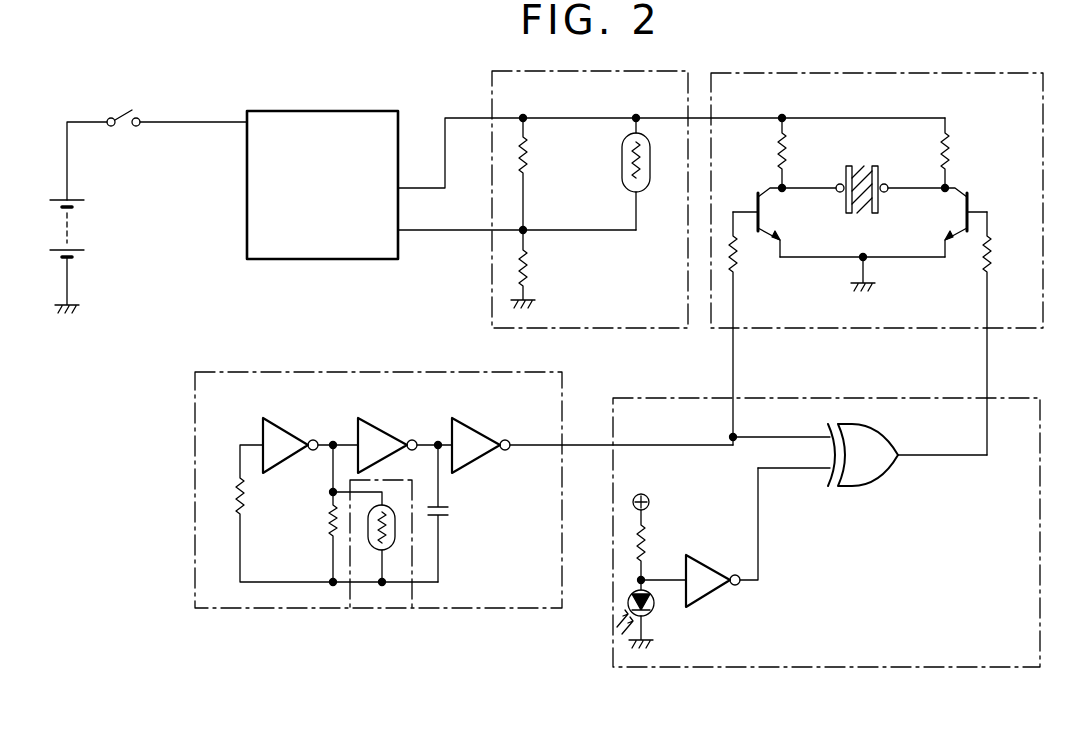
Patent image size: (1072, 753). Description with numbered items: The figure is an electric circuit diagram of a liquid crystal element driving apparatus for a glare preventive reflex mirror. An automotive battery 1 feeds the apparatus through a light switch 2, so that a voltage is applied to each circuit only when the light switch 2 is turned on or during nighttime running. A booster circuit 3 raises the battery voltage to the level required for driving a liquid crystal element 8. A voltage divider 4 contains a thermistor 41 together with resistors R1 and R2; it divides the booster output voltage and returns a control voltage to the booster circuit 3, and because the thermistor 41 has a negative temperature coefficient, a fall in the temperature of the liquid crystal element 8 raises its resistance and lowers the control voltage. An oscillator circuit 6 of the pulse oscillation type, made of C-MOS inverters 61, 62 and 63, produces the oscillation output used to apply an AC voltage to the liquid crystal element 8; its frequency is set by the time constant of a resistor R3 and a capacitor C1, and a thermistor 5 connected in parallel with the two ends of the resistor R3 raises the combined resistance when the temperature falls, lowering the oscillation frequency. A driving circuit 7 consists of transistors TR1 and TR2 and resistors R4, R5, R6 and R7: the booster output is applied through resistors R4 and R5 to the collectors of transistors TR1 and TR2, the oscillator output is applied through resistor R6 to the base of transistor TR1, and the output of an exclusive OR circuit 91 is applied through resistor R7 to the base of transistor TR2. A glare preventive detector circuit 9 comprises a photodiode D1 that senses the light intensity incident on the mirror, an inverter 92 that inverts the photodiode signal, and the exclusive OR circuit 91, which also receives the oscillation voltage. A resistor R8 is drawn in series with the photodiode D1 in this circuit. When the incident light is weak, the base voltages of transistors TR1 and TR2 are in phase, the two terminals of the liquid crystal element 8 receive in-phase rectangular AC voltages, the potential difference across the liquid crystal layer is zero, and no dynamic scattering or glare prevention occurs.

The automotive battery 1 is at (78, 227).
The light switch 2 is at (127, 108).
The booster circuit 3 is at (340, 111).
The voltage divider 4 is at (625, 72).
The thermistor 41 is at (645, 190).
The thermistor 5 is at (393, 547).
The oscillator circuit 6 is at (438, 372).
The inverter 61 is at (298, 431).
The inverter 62 is at (392, 431).
The inverter 63 is at (485, 428).
The driving circuit 7 is at (940, 70).
The liquid crystal element 8 is at (882, 173).
The glare preventive detector circuit 9 is at (1016, 398).
The exclusive OR circuit 91 is at (862, 484).
The inverter 92 is at (717, 568).
The resistor R1 is at (528, 158).
The resistor R2 is at (528, 274).
The resistor R3 is at (328, 518).
The resistor R4 is at (788, 147).
The resistor R5 is at (950, 153).
The resistor R6 is at (740, 254).
The resistor R7 is at (991, 256).
The resistor R8 is at (648, 532).
The capacitor C1 is at (450, 511).
The photodiode D1 is at (652, 613).
The transistor TR1 is at (757, 195).
The transistor TR2 is at (973, 195).